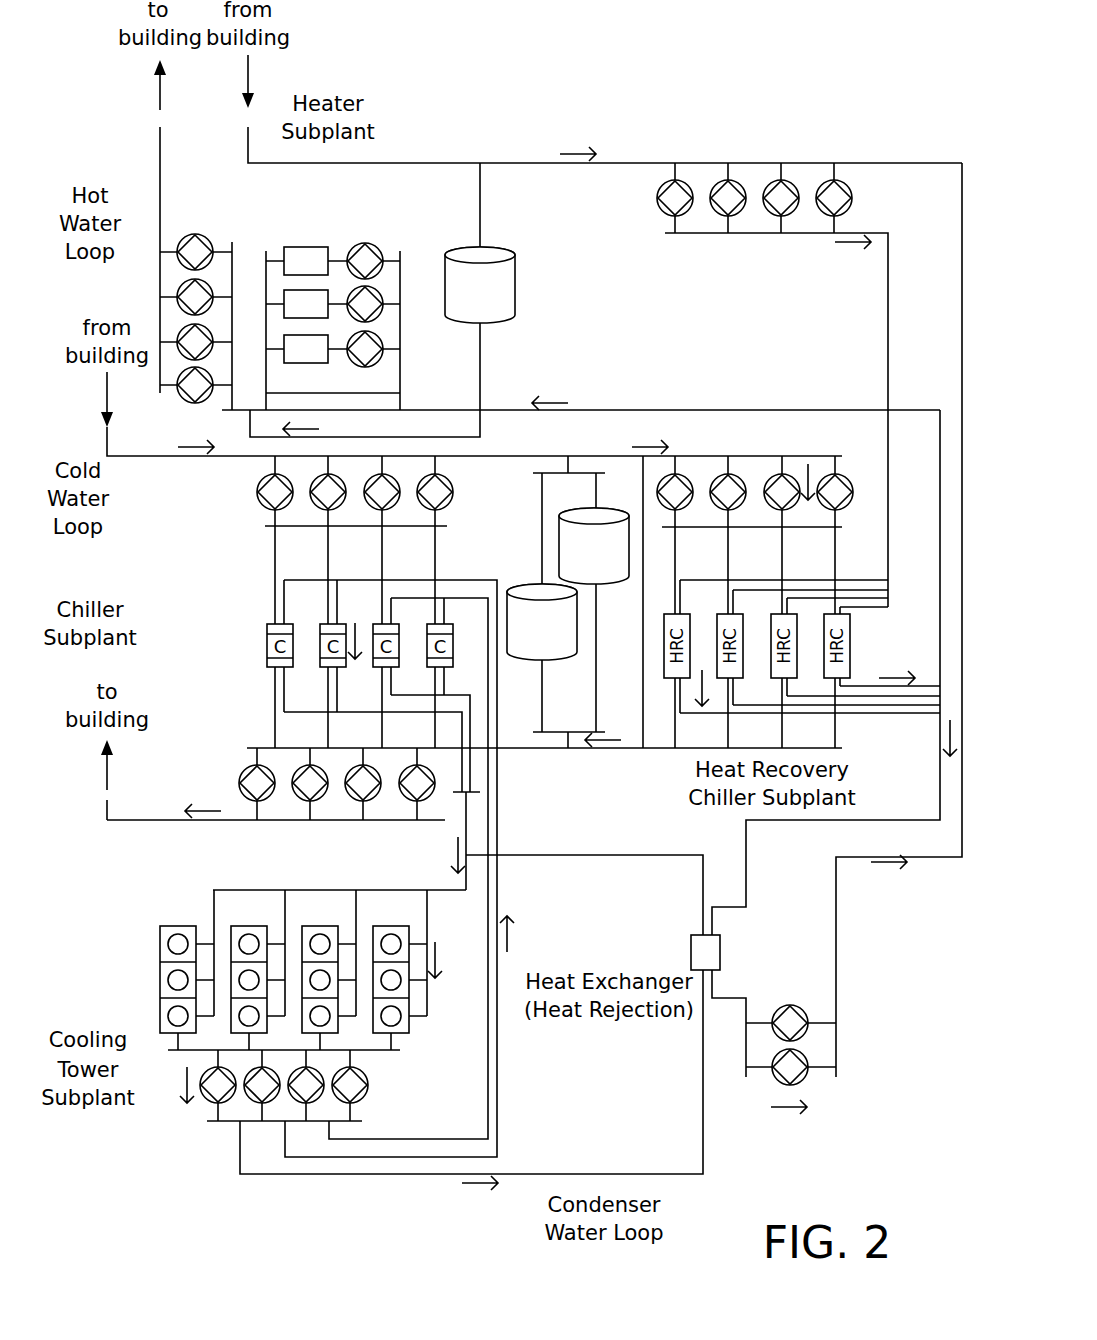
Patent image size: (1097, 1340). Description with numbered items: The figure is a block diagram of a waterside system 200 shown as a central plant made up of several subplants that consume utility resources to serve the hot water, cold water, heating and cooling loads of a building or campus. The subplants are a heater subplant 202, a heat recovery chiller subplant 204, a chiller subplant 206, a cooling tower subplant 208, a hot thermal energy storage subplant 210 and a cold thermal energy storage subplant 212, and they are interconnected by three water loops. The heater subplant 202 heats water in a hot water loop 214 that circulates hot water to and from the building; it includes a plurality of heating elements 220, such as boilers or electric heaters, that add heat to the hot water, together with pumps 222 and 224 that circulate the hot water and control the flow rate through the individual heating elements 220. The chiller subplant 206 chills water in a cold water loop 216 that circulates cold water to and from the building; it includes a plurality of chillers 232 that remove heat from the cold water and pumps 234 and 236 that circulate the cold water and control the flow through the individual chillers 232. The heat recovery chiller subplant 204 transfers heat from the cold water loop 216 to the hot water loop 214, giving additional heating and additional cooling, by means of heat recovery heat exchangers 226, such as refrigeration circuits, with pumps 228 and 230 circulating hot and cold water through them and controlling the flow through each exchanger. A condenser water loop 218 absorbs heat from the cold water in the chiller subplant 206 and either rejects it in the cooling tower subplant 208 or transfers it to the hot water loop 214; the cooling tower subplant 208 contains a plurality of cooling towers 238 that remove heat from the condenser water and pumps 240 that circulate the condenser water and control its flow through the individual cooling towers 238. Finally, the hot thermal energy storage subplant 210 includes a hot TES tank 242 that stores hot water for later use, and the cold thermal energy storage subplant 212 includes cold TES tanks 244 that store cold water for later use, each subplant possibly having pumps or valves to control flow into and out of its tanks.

The waterside system 200 is at (840, 26).
The heater subplant 202 is at (428, 148).
The heat recovery chiller subplant 204 is at (879, 740).
The chiller subplant 206 is at (212, 569).
The cooling tower subplant 208 is at (130, 968).
The hot thermal energy storage subplant 210 is at (547, 306).
The cold thermal energy storage subplant 212 is at (512, 532).
The hot water loop 214 is at (160, 170).
The cold water loop 216 is at (162, 458).
The condenser water loop 218 is at (683, 1176).
The heating elements 220 is at (292, 245).
The pumps 222 is at (203, 236).
The pumps 224 is at (370, 244).
The heat recovery heat exchangers 226 is at (850, 640).
The pumps 228 is at (848, 478).
The pumps 230 is at (853, 195).
The chillers 232 is at (266, 641).
The pumps 234 is at (243, 780).
The pumps 236 is at (262, 487).
The cooling towers 238 is at (409, 1026).
The pumps 240 is at (367, 1092).
The hot TES tank 242 is at (507, 270).
The cold TES tanks 244 is at (579, 519).